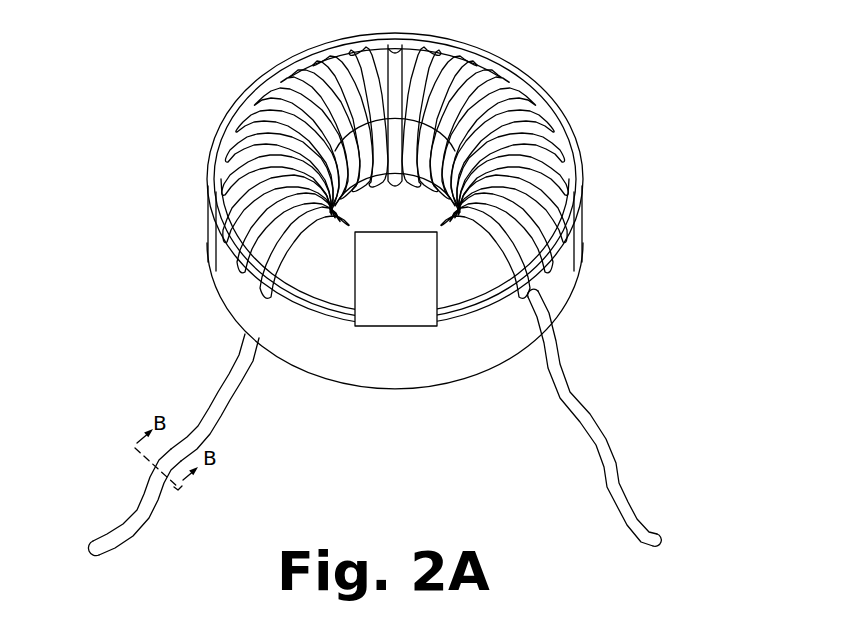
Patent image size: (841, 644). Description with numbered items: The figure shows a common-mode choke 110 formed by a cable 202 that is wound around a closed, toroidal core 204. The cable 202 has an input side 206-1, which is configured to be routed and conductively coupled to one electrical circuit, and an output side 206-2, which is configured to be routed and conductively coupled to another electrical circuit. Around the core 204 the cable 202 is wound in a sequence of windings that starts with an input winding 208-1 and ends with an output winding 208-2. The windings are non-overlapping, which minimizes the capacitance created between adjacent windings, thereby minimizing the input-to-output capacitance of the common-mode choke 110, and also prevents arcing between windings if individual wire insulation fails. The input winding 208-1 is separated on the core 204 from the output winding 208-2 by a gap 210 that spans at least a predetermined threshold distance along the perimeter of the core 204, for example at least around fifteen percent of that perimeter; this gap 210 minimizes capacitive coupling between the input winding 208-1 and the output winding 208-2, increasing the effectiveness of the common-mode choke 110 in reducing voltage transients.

The common-mode choke 110 is at (190, 52).
The cable 202 is at (220, 400).
The core 204 is at (335, 275).
The input side 206-1 is at (130, 512).
The output side 206-2 is at (628, 500).
The input winding 208-1 is at (345, 215).
The output winding 208-2 is at (440, 212).
The gap 210 is at (452, 250).